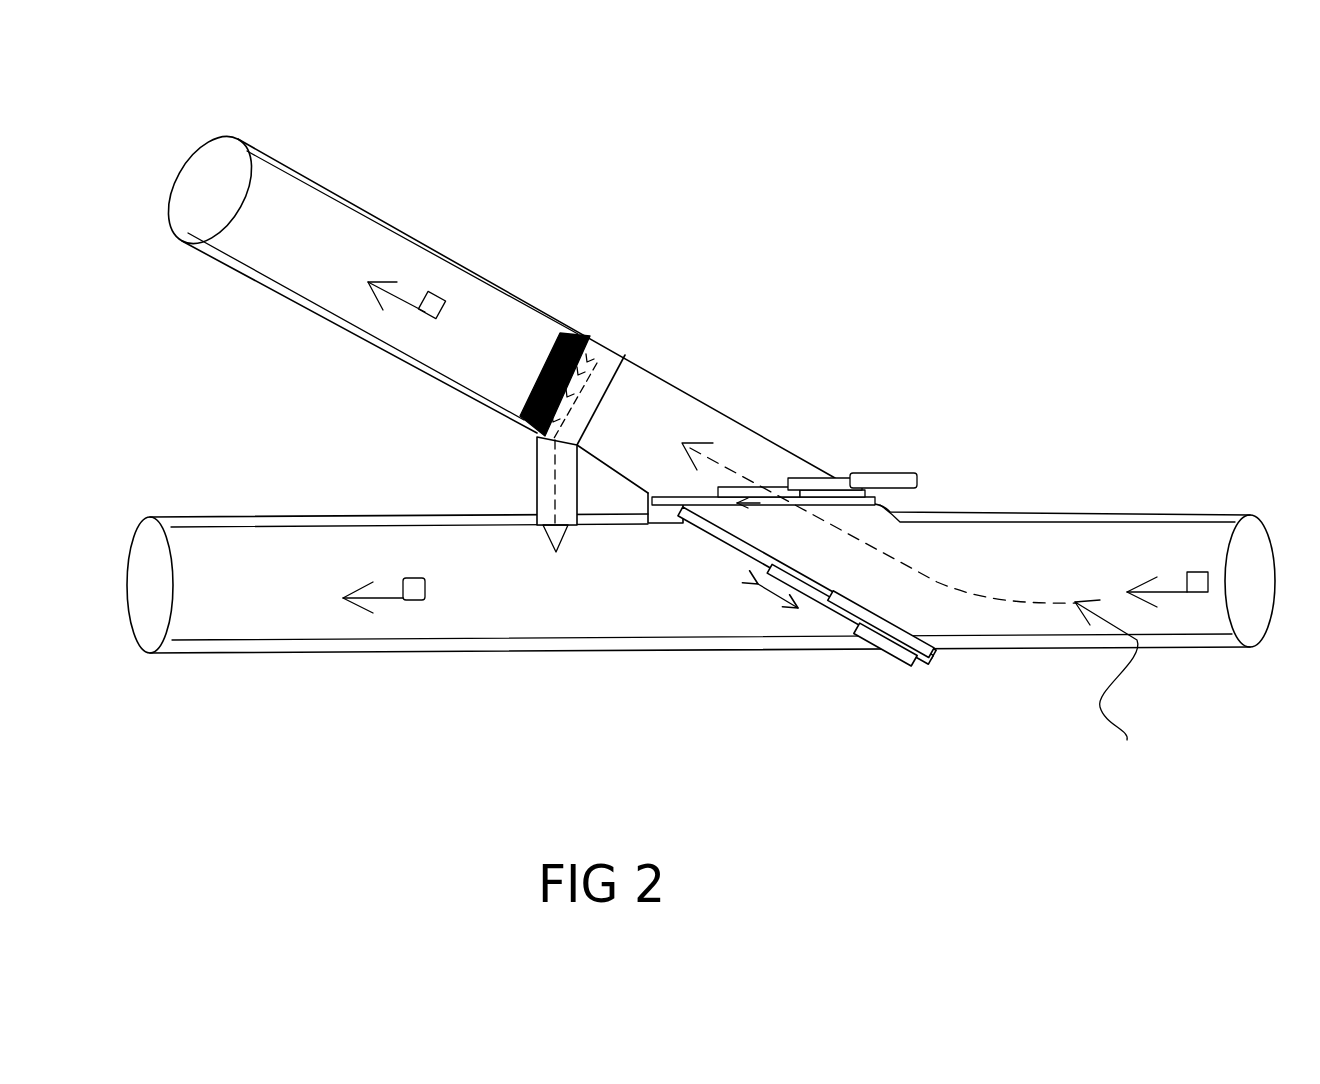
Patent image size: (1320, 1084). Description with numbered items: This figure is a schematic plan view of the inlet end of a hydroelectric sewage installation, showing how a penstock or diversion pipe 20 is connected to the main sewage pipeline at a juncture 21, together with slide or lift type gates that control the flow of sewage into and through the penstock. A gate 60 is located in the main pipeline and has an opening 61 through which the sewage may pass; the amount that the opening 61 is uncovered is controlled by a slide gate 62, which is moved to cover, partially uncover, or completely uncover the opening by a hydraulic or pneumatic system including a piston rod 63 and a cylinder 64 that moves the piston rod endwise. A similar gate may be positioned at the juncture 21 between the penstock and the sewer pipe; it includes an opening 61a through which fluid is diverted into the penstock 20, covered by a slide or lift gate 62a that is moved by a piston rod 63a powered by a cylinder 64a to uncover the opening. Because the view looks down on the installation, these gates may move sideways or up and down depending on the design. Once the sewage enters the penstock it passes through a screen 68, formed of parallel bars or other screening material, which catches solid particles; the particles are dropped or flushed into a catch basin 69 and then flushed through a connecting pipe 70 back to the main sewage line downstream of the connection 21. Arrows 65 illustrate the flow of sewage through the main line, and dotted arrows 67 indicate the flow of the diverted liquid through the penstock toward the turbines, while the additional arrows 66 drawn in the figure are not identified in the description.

The penstock 20 is at (310, 314).
The juncture 21 is at (885, 500).
The gate 60 is at (826, 647).
The opening 61 is at (808, 576).
The opening 61a is at (755, 510).
The slide gate 62 is at (762, 571).
The slide or lift gate 62a is at (755, 476).
The piston rod 63 is at (815, 615).
The piston rod 63a is at (833, 473).
The cylinder 64 is at (871, 652).
The cylinder 64a is at (919, 469).
The arrows 65 is at (397, 604).
The light path through plate stack 66 is at (727, 465).
The dotted arrows 67 is at (412, 291).
The screen 68 is at (582, 332).
The catch basin 69 is at (542, 375).
The connecting pipe 70 is at (534, 477).